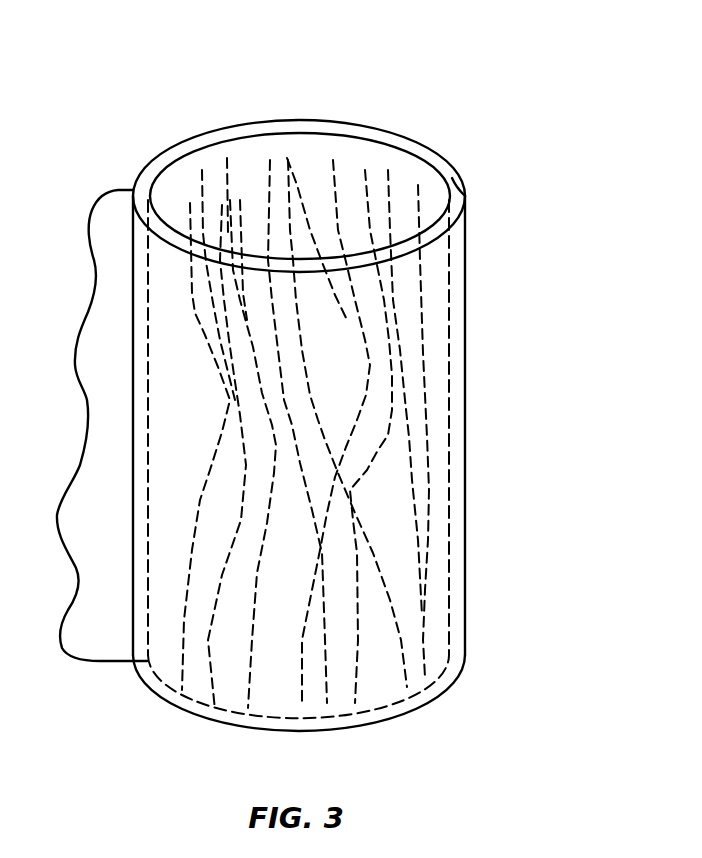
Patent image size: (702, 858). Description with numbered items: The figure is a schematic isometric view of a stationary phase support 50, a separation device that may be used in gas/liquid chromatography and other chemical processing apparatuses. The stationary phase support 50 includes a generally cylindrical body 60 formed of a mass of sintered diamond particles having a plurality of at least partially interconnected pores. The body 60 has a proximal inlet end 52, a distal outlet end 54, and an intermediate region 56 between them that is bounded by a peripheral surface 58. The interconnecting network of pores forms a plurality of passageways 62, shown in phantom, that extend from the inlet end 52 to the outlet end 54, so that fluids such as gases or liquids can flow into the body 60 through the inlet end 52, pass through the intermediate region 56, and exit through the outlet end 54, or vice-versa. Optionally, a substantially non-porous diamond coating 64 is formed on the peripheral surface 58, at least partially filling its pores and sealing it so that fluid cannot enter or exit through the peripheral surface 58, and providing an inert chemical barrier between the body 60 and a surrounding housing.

The stationary phase support 50 is at (503, 79).
The proximal inlet end 52 is at (234, 733).
The distal outlet end 54 is at (234, 153).
The intermediate region 56 is at (83, 387).
The peripheral surface 58 is at (406, 150).
The body 60 is at (361, 152).
The passageways 62 is at (287, 162).
The substantially non-porous diamond coating 64 is at (454, 182).